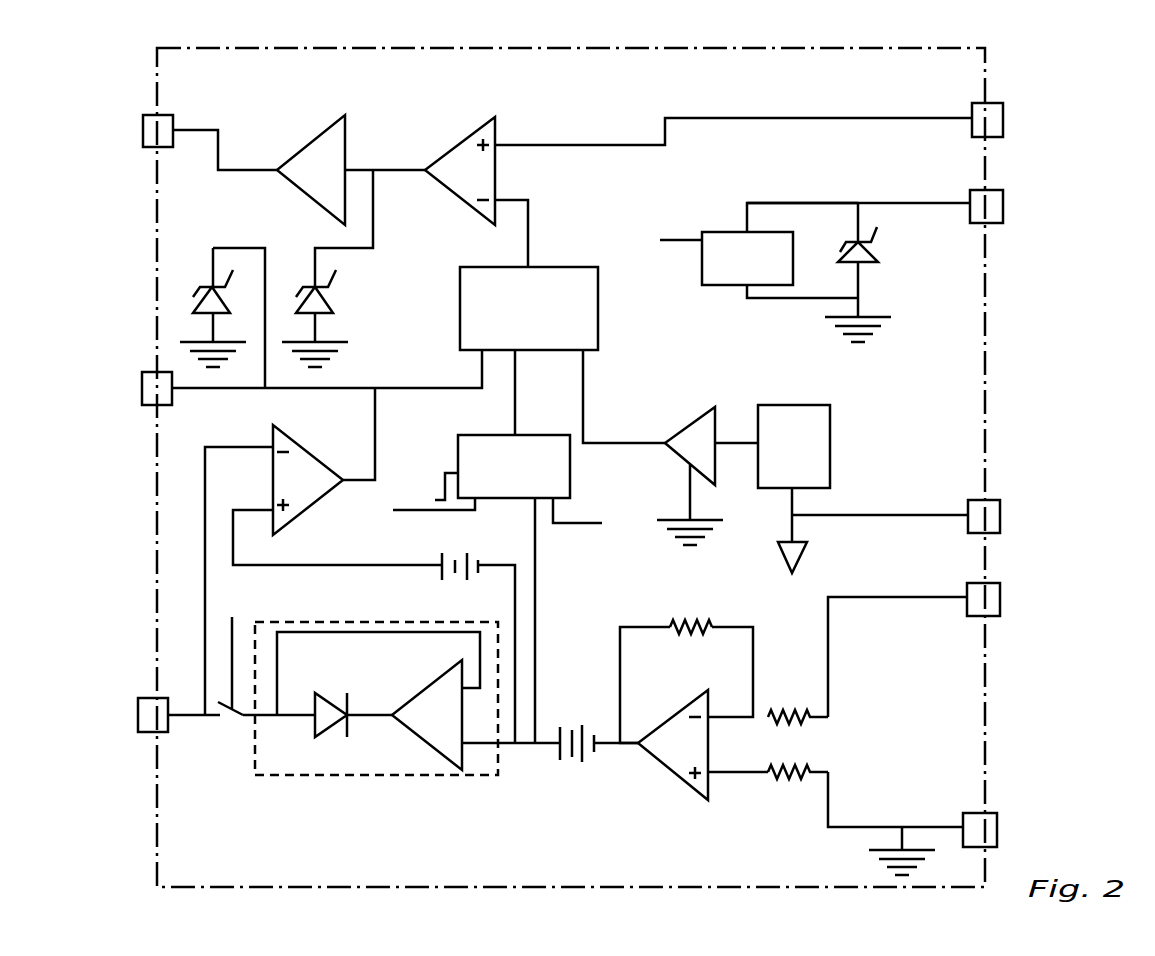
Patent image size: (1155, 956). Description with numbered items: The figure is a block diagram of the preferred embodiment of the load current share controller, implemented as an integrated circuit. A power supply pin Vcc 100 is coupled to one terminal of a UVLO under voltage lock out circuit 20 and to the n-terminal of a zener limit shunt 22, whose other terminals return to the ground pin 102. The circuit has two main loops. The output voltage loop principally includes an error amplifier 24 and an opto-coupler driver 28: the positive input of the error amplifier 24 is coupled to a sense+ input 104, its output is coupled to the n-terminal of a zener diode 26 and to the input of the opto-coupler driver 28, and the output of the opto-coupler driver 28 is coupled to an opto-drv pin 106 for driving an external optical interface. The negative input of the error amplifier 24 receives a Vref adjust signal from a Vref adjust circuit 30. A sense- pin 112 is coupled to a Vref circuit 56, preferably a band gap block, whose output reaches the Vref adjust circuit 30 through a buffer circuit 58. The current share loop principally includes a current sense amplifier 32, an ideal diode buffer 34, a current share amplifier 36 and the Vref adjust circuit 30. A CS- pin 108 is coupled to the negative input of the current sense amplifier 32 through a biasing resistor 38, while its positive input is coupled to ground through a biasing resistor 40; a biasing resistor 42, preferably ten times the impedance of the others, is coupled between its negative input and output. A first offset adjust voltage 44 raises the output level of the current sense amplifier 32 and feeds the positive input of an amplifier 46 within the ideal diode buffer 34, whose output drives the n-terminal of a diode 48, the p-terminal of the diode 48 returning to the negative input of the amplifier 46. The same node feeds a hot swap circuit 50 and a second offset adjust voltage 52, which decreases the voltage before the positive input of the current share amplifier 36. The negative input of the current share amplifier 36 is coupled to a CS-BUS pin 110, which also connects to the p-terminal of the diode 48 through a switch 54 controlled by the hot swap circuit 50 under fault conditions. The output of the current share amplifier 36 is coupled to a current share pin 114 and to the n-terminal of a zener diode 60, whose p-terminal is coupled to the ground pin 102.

The UVLO under voltage lock out circuit 20 is at (707, 232).
The zener limit shunt 22 is at (876, 264).
The error amplifier 24 is at (495, 170).
The zener diode 26 is at (330, 315).
The opto-coupler driver 28 is at (310, 183).
The Vref adjust circuit 30 is at (598, 332).
The current sense amplifier 32 is at (660, 722).
The ideal diode buffer 34 is at (376, 723).
The current share amplifier 36 is at (273, 483).
The biasing resistor 38 is at (812, 722).
The biasing resistor 40 is at (815, 790).
The biasing resistor 42 is at (666, 625).
The first offset adjust voltage 44 is at (573, 727).
The amplifier 46 is at (430, 722).
The diode 48 is at (340, 728).
The hot swap circuit 50 is at (487, 435).
The second offset adjust voltage 52 is at (470, 550).
The switch 54 is at (228, 723).
The Vref circuit 56 is at (830, 423).
The buffer circuit 58 is at (708, 455).
The zener diode 60 is at (200, 292).
The power supply pin Vcc 100 is at (990, 190).
The ground pin 102 is at (990, 813).
The sense+ input 104 is at (991, 103).
The opto-drv pin 106 is at (150, 115).
The CS- pin 108 is at (989, 590).
The CS-BUS pin 110 is at (139, 698).
The sense- pin 112 is at (989, 500).
The current share pin 114 is at (146, 405).